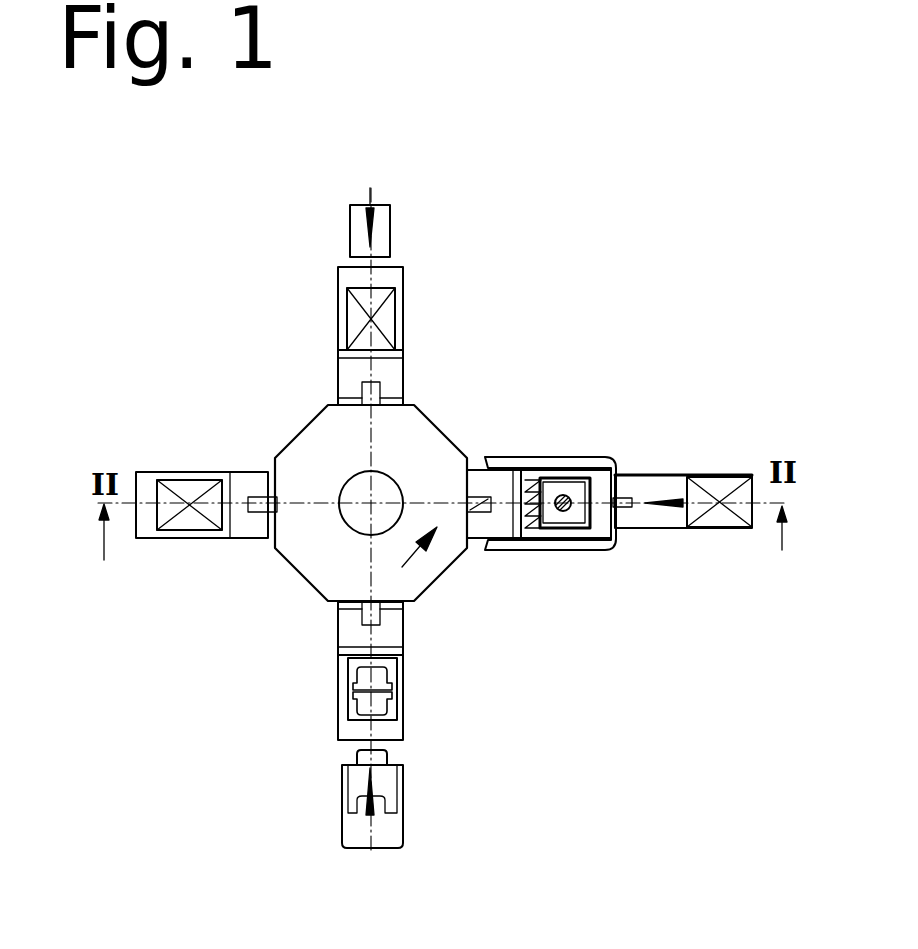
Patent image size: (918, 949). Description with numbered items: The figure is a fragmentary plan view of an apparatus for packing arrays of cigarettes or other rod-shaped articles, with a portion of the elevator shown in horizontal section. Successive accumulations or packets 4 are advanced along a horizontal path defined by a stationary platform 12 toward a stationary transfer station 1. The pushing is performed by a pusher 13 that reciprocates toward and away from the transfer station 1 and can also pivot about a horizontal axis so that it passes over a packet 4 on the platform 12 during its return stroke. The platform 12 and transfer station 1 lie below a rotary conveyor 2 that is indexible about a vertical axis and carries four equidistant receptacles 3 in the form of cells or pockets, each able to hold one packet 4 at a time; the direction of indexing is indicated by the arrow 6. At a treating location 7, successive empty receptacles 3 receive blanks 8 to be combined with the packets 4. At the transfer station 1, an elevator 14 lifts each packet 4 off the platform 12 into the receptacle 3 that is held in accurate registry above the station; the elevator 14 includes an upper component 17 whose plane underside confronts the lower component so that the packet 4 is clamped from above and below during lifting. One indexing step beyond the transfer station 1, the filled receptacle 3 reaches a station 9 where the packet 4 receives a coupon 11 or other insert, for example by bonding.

The transfer station 1 is at (620, 455).
The rotary conveyor 2 is at (447, 438).
The receptacle 3 is at (405, 288).
The accumulation (packet) 4 is at (380, 348).
The arrow 6 is at (402, 567).
The treating location 7 is at (322, 703).
The blank 8 is at (383, 690).
The station 9 is at (384, 280).
The coupon 11 is at (382, 245).
The platform 12 is at (657, 530).
The pusher 13 is at (624, 530).
The elevator 14 is at (572, 470).
The upper component 17 is at (556, 510).